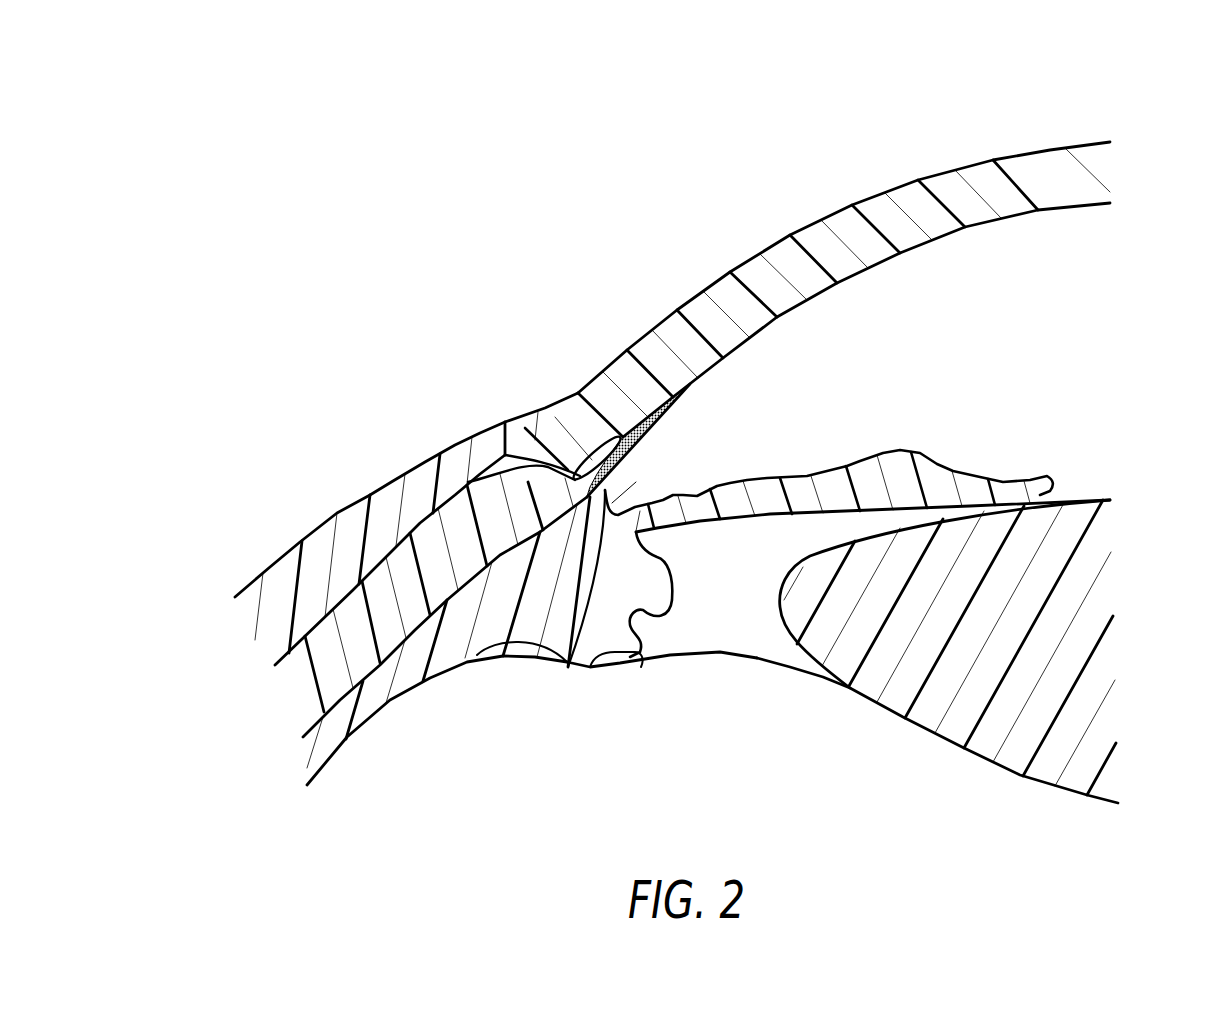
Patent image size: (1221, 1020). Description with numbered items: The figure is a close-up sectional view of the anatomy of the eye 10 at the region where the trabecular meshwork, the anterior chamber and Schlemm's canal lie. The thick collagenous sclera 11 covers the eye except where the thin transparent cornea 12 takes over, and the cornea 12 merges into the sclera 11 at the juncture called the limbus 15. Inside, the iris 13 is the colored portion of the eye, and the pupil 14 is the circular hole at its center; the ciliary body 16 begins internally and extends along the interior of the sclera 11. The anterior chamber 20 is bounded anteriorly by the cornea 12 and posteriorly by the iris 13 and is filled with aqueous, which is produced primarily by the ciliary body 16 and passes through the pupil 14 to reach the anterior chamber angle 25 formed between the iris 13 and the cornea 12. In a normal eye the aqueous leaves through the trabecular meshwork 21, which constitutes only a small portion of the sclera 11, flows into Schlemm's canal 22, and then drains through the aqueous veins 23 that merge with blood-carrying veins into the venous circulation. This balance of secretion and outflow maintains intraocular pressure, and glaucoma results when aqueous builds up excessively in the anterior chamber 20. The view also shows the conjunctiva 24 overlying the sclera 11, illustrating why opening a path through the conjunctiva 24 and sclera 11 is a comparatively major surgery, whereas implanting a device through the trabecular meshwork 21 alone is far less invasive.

The eye 10 is at (622, 112).
The sclera 11 is at (387, 607).
The cornea 12 is at (817, 240).
The iris 13 is at (997, 478).
The pupil 14 is at (1087, 472).
The limbus 15 is at (562, 384).
The ciliary body 16 is at (633, 653).
The anterior chamber 20 is at (977, 297).
The trabecular meshwork 21 is at (648, 428).
The Schlemm's canal 22 is at (522, 418).
The aqueous veins 23 is at (460, 495).
The conjunctiva 24 is at (390, 480).
The anterior chamber angle 25 is at (568, 667).